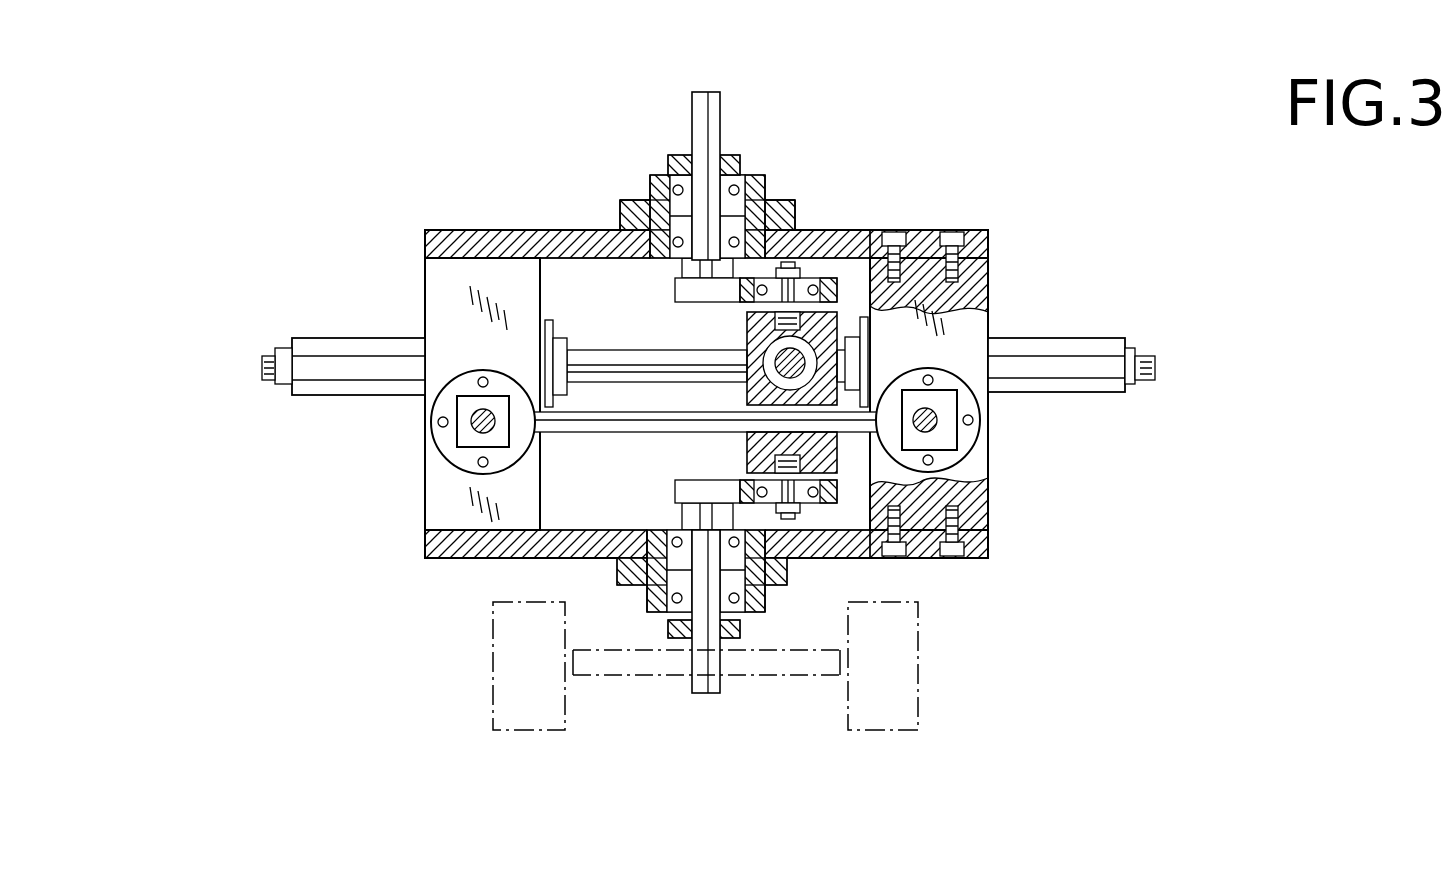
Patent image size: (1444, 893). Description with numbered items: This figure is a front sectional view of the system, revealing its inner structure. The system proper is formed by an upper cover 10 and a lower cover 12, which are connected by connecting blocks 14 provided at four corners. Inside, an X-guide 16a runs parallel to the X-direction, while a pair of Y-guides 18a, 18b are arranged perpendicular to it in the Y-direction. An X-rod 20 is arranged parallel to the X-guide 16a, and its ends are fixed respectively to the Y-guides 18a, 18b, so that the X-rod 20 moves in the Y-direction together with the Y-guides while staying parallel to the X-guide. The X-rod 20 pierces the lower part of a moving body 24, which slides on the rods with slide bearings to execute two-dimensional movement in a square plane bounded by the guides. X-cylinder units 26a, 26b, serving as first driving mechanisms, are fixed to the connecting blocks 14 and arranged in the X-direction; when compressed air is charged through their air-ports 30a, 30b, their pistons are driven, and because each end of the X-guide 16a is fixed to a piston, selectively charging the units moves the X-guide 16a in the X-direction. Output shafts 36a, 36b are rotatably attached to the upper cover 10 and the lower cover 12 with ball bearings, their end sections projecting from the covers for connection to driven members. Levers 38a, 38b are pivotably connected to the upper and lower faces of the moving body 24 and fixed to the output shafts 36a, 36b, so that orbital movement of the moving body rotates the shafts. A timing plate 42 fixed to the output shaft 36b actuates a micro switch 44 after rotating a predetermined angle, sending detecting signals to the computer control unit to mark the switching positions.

The upper cover 10 is at (447, 230).
The lower cover 12 is at (425, 548).
The connecting blocks 14 is at (440, 300).
The X-guide 16a is at (610, 365).
The Y-guide 18a is at (990, 432).
The Y-guide 18b is at (470, 428).
The X-rod 20 is at (583, 410).
The moving body 24 is at (745, 340).
The X-cylinder unit 26a is at (1078, 355).
The X-cylinder unit 26b is at (318, 356).
The air-port 30a is at (1157, 364).
The air-port 30b is at (262, 365).
The output shaft 36a is at (720, 128).
The output shaft 36b is at (708, 695).
The lever 38a is at (850, 280).
The lever 38b is at (690, 488).
The timing plate 42 is at (598, 678).
The micro switch 44 is at (493, 722).